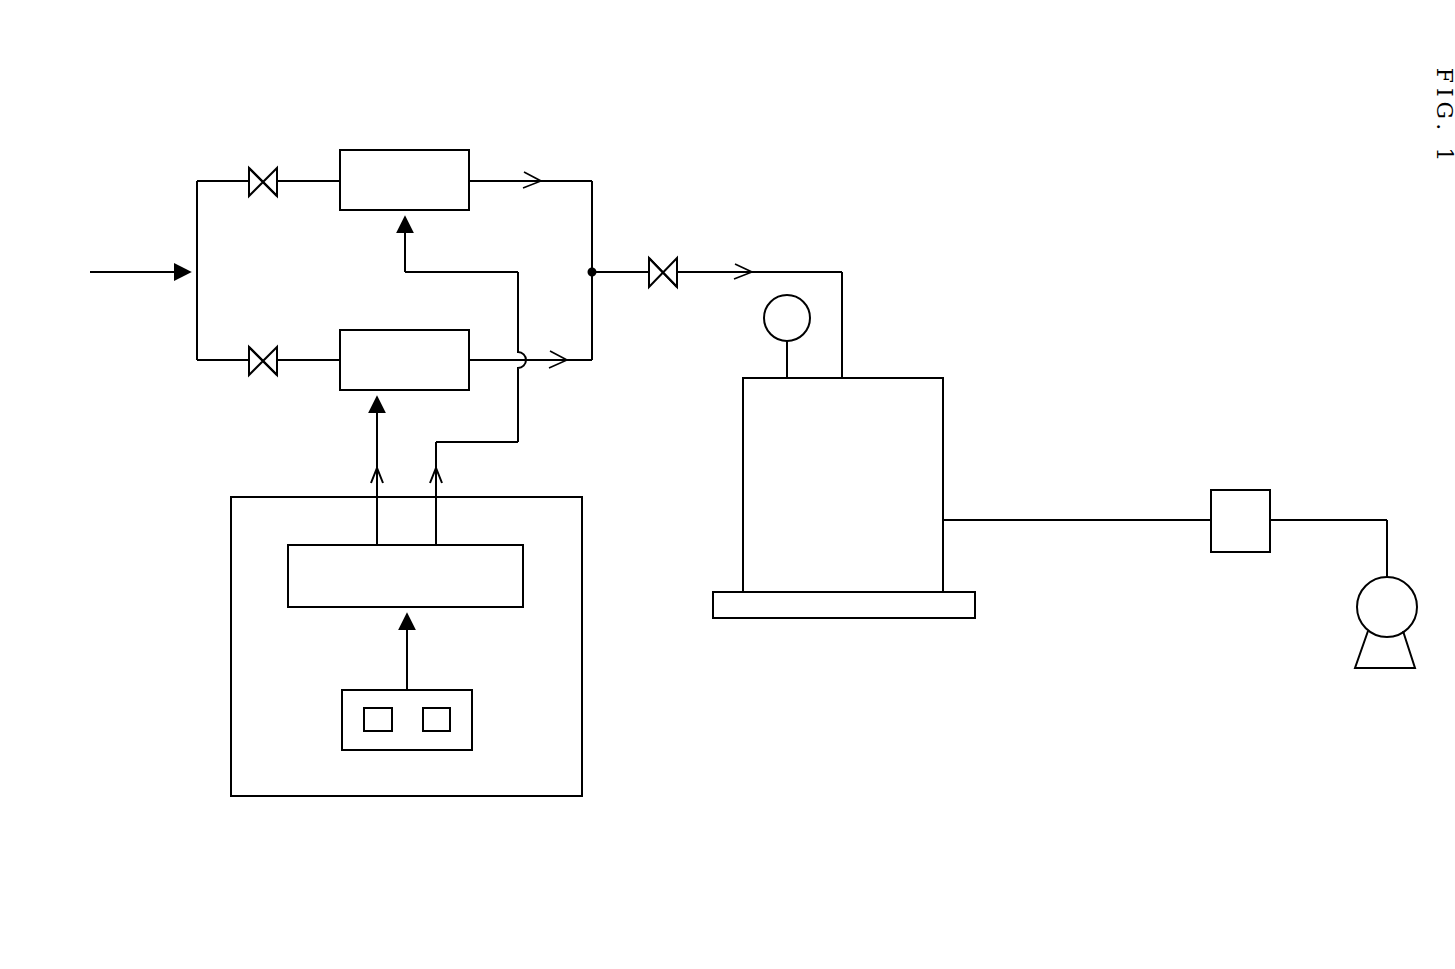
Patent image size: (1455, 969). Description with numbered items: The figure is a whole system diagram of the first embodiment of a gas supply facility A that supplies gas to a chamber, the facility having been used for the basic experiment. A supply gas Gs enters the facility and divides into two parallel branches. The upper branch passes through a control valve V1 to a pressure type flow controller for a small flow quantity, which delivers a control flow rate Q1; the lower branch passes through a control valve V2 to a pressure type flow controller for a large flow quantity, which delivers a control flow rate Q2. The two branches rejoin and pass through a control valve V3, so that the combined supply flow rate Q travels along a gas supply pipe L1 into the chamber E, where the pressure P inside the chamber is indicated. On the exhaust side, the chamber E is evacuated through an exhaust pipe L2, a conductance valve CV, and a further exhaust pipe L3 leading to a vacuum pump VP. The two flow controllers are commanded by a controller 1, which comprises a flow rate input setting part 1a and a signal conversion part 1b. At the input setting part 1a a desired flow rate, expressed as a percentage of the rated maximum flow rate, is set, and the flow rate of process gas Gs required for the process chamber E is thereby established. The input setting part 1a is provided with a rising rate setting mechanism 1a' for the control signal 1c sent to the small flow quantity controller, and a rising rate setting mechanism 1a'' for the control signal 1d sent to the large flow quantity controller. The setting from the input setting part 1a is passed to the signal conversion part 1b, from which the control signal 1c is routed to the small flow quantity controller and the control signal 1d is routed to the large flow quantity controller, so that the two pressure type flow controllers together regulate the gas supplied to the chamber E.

The gas supply facility A is at (470, 90).
The supply gas Gs is at (140, 259).
The control valve V1 is at (264, 168).
The control valve V2 is at (260, 347).
The control valve V3 is at (671, 258).
The control flow rate of pressure type flow controller FCS(A) Q1 is at (530, 176).
The control flow rate of pressure type flow controller FCS(B) Q2 is at (552, 356).
The supply flow rate Q is at (749, 268).
The gas supply pipe L1 is at (799, 271).
The pressure inside chamber P is at (787, 336).
The chamber E is at (767, 437).
The exhaust pipe L2 is at (1050, 519).
The conductance valve CV is at (1240, 521).
The exhaust pipe L3 is at (1350, 519).
The vacuum pump VP is at (1386, 622).
The controller 1 is at (582, 650).
The flow rate input setting part 1a is at (487, 682).
The rising rate setting mechanism 1a' is at (370, 773).
The rising rate setting mechanism 1a'' is at (440, 773).
The signal conversion part 1b is at (523, 577).
The control signal 1c is at (443, 478).
The control signal 1d is at (372, 472).